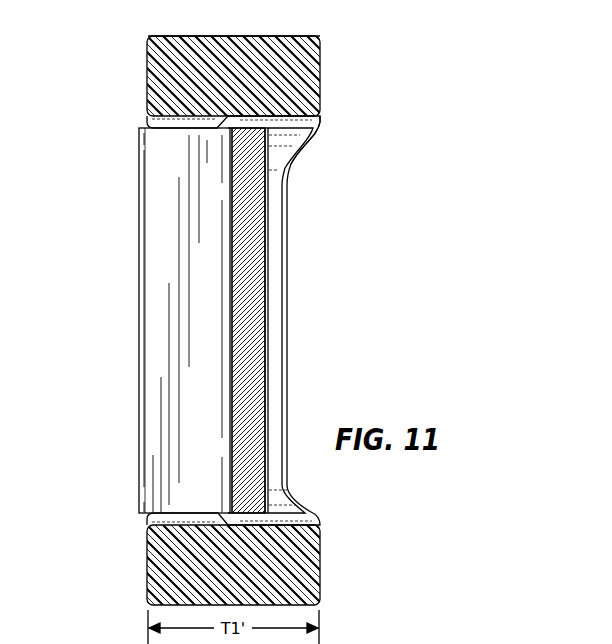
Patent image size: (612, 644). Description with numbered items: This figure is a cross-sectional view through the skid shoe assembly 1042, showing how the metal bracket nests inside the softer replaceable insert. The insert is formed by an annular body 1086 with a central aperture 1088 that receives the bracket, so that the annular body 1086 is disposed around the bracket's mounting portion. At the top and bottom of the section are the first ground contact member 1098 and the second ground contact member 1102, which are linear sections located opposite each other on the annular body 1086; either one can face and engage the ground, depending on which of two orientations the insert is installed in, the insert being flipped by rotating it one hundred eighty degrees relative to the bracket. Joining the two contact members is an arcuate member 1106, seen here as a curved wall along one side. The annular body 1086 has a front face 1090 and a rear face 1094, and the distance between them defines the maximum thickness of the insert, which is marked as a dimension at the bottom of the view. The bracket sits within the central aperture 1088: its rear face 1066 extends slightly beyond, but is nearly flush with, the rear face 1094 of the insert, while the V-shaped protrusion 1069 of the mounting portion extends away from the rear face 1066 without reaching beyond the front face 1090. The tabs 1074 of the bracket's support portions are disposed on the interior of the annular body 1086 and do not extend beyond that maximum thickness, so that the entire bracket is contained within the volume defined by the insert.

The skid shoe assembly 1042 is at (90, 187).
The rear face 1066 is at (138, 320).
The V-shaped protrusion 1069 is at (258, 362).
The tabs 1074 is at (267, 308).
The annular body 1086 is at (180, 38).
The central aperture 1088 is at (143, 516).
The front face 1090 is at (305, 140).
The rear face 1094 is at (148, 118).
The first ground contact member 1098 is at (298, 73).
The second ground contact member 1102 is at (300, 572).
The arcuate members 1106 is at (288, 248).